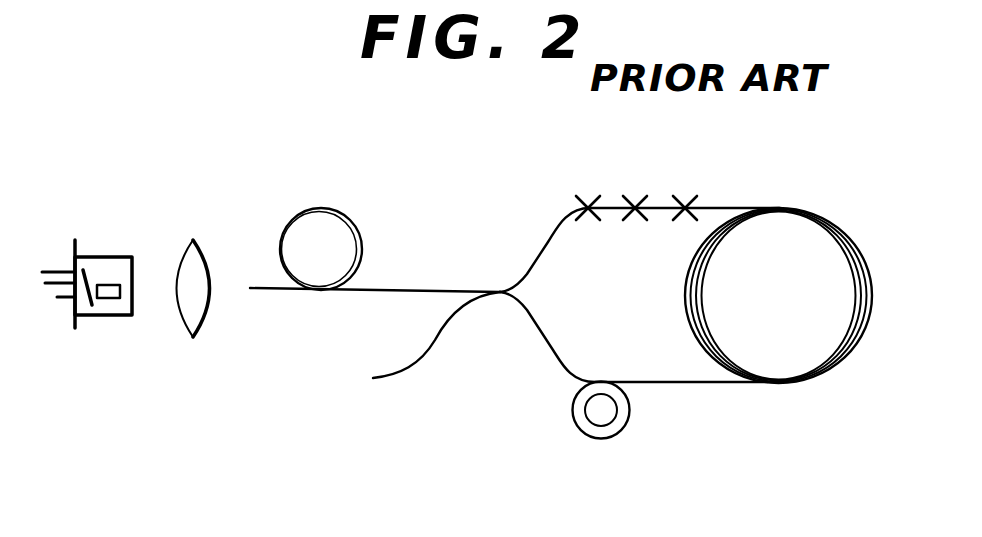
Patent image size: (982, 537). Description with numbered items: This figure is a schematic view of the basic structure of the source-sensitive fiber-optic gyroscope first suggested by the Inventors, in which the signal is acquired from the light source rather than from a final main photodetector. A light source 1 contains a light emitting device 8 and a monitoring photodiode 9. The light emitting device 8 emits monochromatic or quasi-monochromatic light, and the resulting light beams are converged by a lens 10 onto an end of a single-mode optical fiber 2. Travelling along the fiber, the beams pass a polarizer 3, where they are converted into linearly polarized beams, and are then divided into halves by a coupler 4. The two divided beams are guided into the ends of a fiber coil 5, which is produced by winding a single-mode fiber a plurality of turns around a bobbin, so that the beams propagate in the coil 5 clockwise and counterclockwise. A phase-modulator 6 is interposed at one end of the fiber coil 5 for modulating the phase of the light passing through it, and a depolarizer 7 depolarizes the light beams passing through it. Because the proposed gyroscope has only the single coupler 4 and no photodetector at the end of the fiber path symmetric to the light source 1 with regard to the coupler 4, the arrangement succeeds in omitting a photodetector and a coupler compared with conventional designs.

The light source 1 is at (97, 272).
The single-mode optical fiber 2 is at (371, 294).
The polarizer 3 is at (290, 222).
The coupler 4 is at (478, 297).
The fiber coil 5 is at (740, 383).
The phase-modulator 6 is at (585, 423).
The depolarizer 7 is at (567, 188).
The light emitting device 8 is at (111, 290).
The monitoring photodiode 9 is at (85, 300).
The lens 10 is at (187, 268).